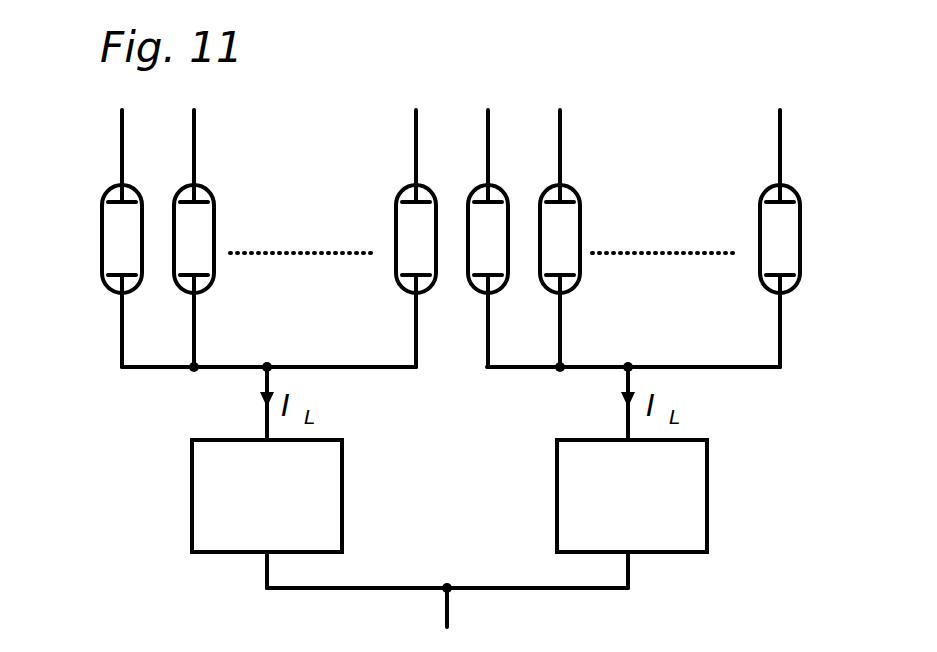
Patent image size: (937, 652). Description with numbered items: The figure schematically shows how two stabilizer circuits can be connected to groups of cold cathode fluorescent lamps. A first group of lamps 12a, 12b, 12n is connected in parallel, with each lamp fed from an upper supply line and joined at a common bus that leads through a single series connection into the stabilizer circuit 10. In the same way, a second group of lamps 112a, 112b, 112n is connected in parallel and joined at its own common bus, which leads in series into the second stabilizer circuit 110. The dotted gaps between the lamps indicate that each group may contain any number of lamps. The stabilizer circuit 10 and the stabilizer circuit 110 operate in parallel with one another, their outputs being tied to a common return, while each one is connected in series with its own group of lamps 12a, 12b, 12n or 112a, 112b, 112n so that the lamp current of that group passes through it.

The lamp 12a is at (104, 250).
The lamp 12b is at (210, 280).
The lamp 12n is at (400, 282).
The lamp 112a is at (500, 282).
The lamp 112b is at (574, 280).
The lamp 112n is at (796, 282).
The stabilizer circuit 10 is at (202, 530).
The stabilizer circuit 110 is at (700, 532).